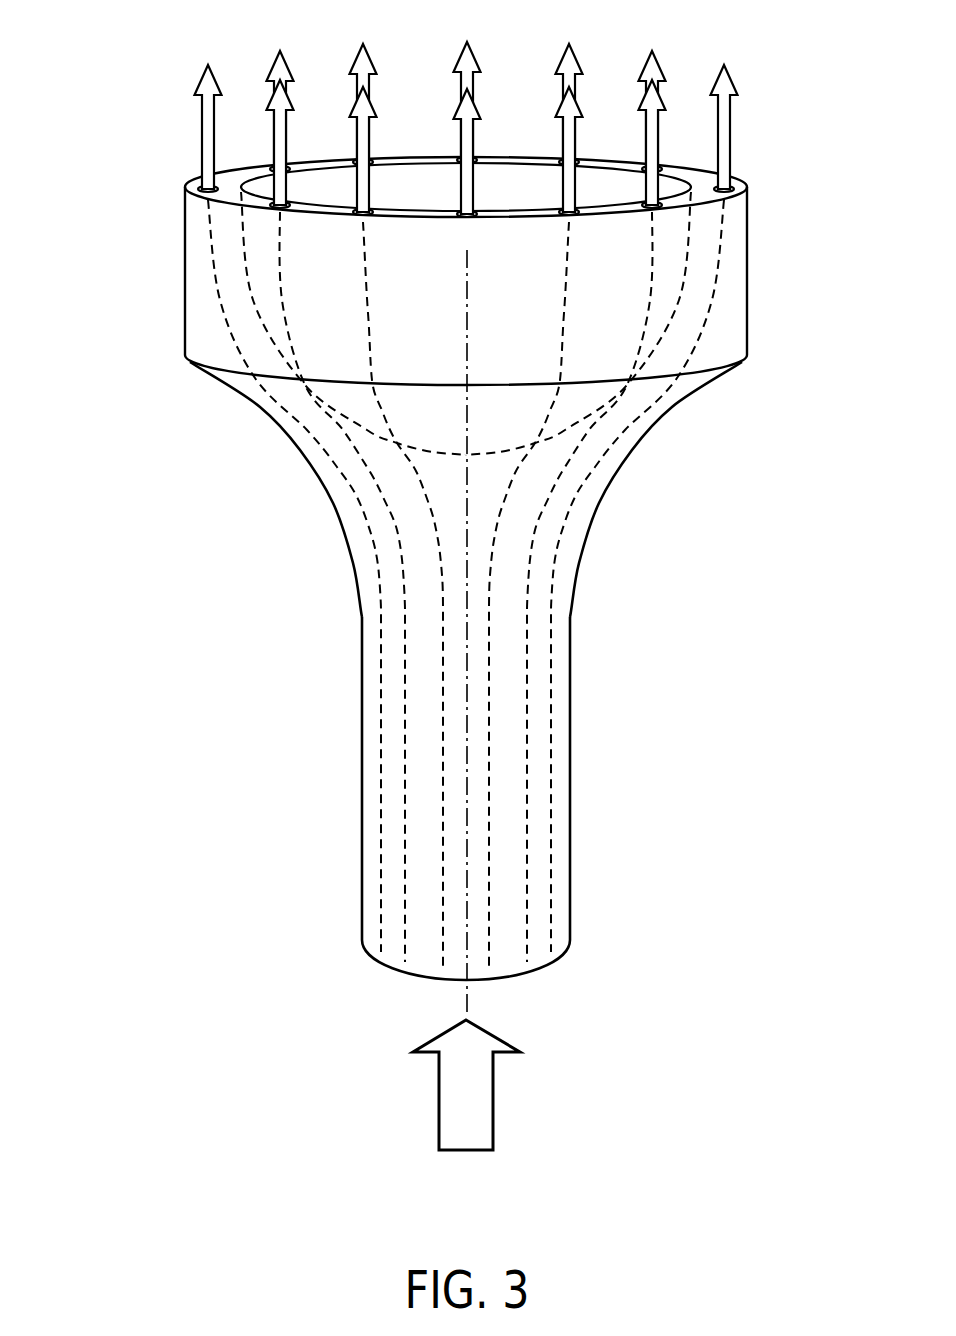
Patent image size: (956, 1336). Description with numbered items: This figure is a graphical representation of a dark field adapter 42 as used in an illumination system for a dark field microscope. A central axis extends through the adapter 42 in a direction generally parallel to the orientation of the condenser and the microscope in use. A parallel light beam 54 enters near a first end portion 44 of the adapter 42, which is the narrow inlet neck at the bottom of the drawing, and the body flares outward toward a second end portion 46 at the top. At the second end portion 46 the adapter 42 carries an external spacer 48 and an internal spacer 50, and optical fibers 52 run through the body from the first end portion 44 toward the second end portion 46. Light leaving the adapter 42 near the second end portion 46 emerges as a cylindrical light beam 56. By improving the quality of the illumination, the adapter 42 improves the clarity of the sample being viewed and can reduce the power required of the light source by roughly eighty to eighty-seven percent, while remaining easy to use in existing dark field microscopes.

The adapter 42 is at (676, 760).
The first end portion 44 is at (360, 922).
The second end portion 46 is at (145, 236).
The external spacer 48 is at (752, 268).
The internal spacer 50 is at (680, 322).
The optical fibers 52 is at (490, 722).
The parallel light beam 54 is at (439, 1104).
The cylindrical light beam 56 is at (268, 55).